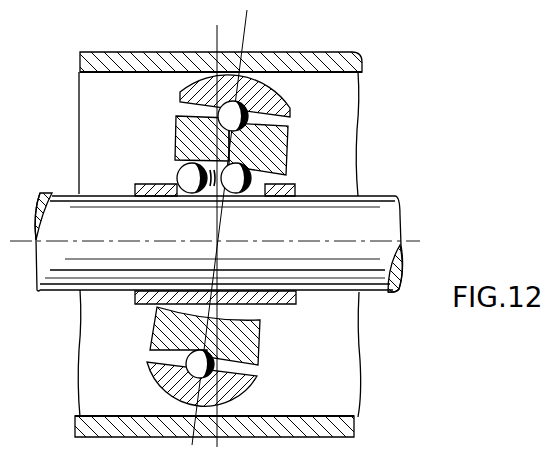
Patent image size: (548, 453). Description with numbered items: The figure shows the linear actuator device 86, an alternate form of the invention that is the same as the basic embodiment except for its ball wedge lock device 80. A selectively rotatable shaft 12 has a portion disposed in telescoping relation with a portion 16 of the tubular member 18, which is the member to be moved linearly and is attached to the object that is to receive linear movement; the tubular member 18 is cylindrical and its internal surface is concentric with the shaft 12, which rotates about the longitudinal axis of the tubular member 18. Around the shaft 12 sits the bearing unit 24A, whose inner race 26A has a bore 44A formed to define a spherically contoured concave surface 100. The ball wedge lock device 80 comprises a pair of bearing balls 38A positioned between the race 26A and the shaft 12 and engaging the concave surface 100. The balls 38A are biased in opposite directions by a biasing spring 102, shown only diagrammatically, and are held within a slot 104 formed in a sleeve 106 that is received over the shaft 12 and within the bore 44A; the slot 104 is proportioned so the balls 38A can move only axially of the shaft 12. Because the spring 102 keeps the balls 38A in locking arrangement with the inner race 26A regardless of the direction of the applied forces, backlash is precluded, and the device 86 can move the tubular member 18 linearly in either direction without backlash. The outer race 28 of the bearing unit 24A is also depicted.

The shaft 12 is at (380, 195).
The portion of tubular member 16 is at (362, 62).
The tubular member 18 is at (318, 50).
The bearing unit 24A is at (188, 132).
The inner race 26A is at (285, 155).
The outer race 28 is at (190, 86).
The bearing balls 38A is at (183, 197).
The bore 44A is at (270, 312).
The ball wedge lock device 80 is at (183, 194).
The linear actuator device 86 is at (315, 113).
The spherically contoured concave surface 100 is at (290, 181).
The biasing spring 102 is at (180, 140).
The slot 104 is at (257, 200).
The sleeve 106 is at (140, 194).